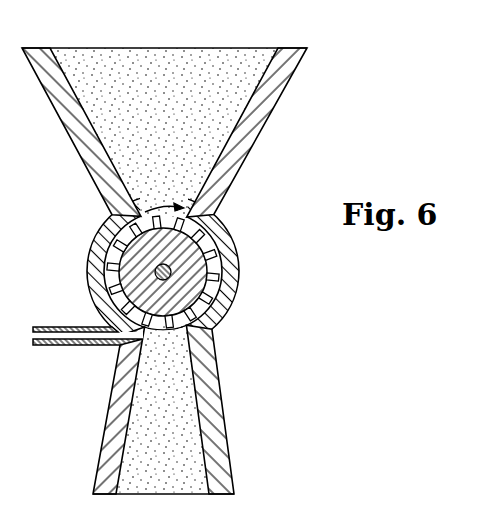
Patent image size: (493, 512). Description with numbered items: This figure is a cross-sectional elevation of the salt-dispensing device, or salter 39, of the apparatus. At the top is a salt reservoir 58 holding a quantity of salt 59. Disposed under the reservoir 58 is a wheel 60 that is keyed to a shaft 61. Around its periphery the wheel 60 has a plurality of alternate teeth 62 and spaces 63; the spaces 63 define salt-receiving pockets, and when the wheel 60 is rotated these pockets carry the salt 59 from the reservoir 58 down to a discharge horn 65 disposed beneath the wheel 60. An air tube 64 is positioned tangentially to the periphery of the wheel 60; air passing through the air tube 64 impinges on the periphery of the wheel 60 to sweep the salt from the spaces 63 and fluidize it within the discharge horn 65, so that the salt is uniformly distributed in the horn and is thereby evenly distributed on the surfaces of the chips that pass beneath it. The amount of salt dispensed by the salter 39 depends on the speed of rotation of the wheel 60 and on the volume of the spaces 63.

The salter 39 is at (262, 150).
The salt reservoir 58 is at (265, 100).
The salt 59 is at (170, 66).
The wheel 60 is at (192, 277).
The shaft 61 is at (217, 290).
The teeth 62 is at (217, 257).
The spaces 63 is at (210, 220).
The air tube 64 is at (65, 327).
The discharge horn 65 is at (215, 430).